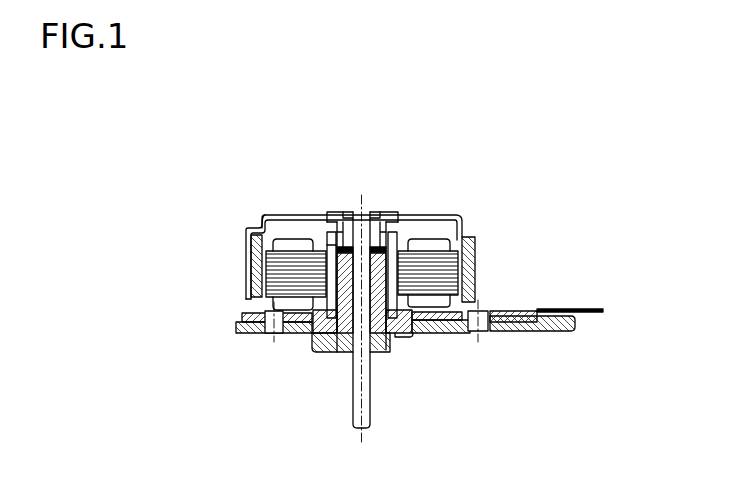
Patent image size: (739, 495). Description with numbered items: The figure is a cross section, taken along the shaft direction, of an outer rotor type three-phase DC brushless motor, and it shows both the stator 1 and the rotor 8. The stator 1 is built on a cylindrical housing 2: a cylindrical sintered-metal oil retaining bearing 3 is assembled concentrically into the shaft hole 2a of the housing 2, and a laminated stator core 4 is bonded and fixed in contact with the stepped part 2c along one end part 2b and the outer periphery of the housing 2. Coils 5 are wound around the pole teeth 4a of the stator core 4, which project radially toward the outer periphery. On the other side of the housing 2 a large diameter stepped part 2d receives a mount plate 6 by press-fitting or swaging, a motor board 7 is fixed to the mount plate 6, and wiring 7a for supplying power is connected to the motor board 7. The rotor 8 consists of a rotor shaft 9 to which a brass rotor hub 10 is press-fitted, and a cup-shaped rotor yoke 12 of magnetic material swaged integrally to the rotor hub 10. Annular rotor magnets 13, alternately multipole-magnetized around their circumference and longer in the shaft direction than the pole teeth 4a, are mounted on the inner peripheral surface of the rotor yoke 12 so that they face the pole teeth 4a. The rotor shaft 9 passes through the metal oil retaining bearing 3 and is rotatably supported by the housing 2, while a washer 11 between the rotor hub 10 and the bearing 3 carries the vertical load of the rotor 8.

The stator 1 is at (455, 242).
The housing 2 is at (403, 337).
The shaft hole 2a is at (384, 238).
The one end part 2b is at (340, 247).
The stepped part 2c is at (386, 249).
The large diameter stepped part 2d is at (407, 335).
The metal oil retaining bearing 3 is at (343, 337).
The stator core 4 is at (281, 263).
The pole teeth 4a is at (455, 264).
The coils 5 is at (445, 238).
The mount plate 6 is at (548, 331).
The motor board 7 is at (510, 316).
The wiring 7a is at (570, 310).
The rotor 8 is at (258, 223).
The rotor shaft 9 is at (371, 415).
The rotor hub 10 is at (362, 220).
The washer 11 is at (328, 250).
The rotor yoke 12 is at (327, 220).
The rotor magnets 13 is at (256, 266).